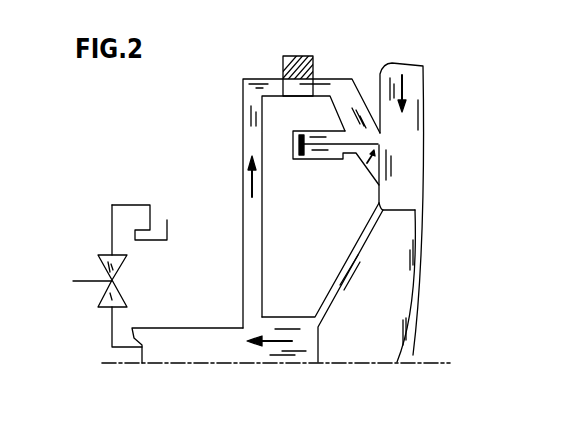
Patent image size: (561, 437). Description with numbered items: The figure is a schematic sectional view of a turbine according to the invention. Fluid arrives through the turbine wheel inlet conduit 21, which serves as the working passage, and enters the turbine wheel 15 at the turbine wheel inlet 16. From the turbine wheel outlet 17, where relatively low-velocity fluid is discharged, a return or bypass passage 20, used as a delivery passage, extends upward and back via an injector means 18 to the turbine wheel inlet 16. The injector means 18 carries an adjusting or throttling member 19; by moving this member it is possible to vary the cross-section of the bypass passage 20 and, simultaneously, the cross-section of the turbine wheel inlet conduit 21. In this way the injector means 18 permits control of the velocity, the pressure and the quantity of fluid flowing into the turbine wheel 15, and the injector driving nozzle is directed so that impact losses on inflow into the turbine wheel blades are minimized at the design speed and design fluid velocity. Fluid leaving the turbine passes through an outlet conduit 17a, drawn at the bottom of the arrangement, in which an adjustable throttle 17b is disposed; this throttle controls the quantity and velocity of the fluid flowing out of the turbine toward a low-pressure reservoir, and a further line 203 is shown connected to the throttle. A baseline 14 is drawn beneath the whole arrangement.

The floor / ground line 14 is at (437, 363).
The turbine wheel 15 is at (393, 287).
The turbine wheel inlet 16 is at (412, 208).
The turbine wheel outlet 17 is at (315, 333).
The inlet duct 17a is at (160, 352).
The adjustable throttle 17b is at (102, 303).
The injector means 18 is at (394, 137).
The adjusting or throttling member 19 is at (380, 154).
The return or bypass passage 20 is at (252, 94).
The turbine wheel inlet conduit 21 is at (391, 84).
The supply pipe 203 is at (167, 219).